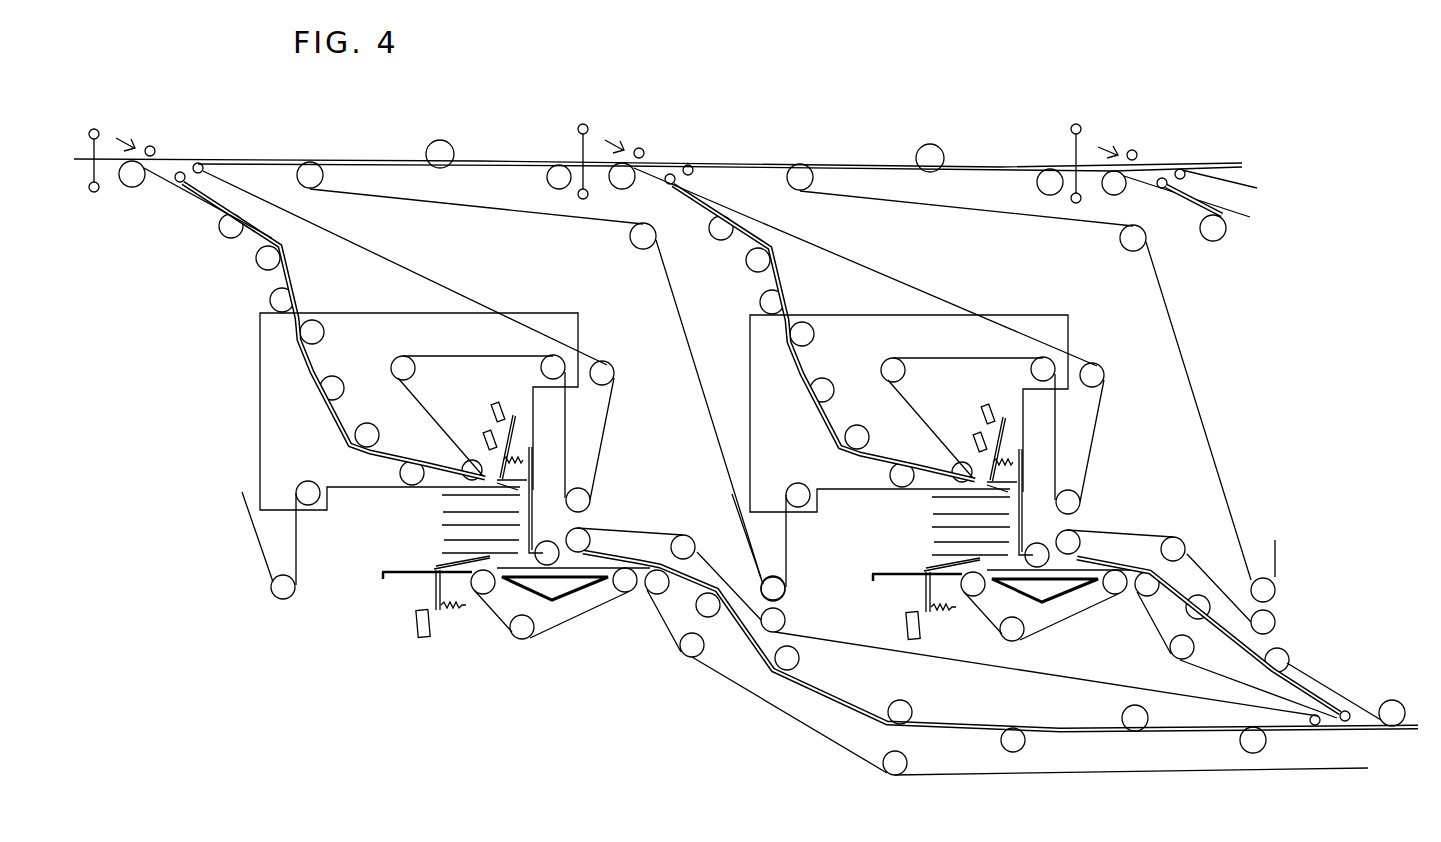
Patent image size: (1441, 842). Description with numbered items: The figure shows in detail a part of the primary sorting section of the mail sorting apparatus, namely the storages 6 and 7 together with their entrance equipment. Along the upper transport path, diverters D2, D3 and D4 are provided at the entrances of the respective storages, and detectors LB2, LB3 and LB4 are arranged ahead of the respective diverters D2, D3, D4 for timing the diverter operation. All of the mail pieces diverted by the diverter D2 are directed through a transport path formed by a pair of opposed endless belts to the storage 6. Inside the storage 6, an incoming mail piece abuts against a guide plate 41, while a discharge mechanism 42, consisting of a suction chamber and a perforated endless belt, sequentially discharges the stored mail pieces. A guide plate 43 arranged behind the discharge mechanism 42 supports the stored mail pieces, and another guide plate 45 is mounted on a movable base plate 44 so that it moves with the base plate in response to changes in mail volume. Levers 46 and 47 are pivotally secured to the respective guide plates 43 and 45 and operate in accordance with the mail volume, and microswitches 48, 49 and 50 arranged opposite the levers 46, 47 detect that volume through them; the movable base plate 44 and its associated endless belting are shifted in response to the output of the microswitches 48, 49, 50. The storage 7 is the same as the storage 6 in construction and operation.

The storage 6 is at (432, 526).
The storage 7 is at (1000, 523).
The guide plate 41 is at (531, 514).
The discharge mechanism 42 is at (517, 611).
The guide plate 43 is at (381, 580).
The movable base plate 44 is at (274, 432).
The guide plate 45 is at (531, 480).
The lever 46 is at (435, 594).
The lever 47 is at (510, 428).
The microswitch 48 is at (419, 638).
The microswitch 49 is at (486, 438).
The microswitch 50 is at (492, 412).
The detector LB2 is at (94, 128).
The diverter D2 is at (150, 146).
The detector LB3 is at (583, 124).
The diverter D3 is at (640, 148).
The detector LB4 is at (1077, 124).
The diverter D4 is at (1134, 150).